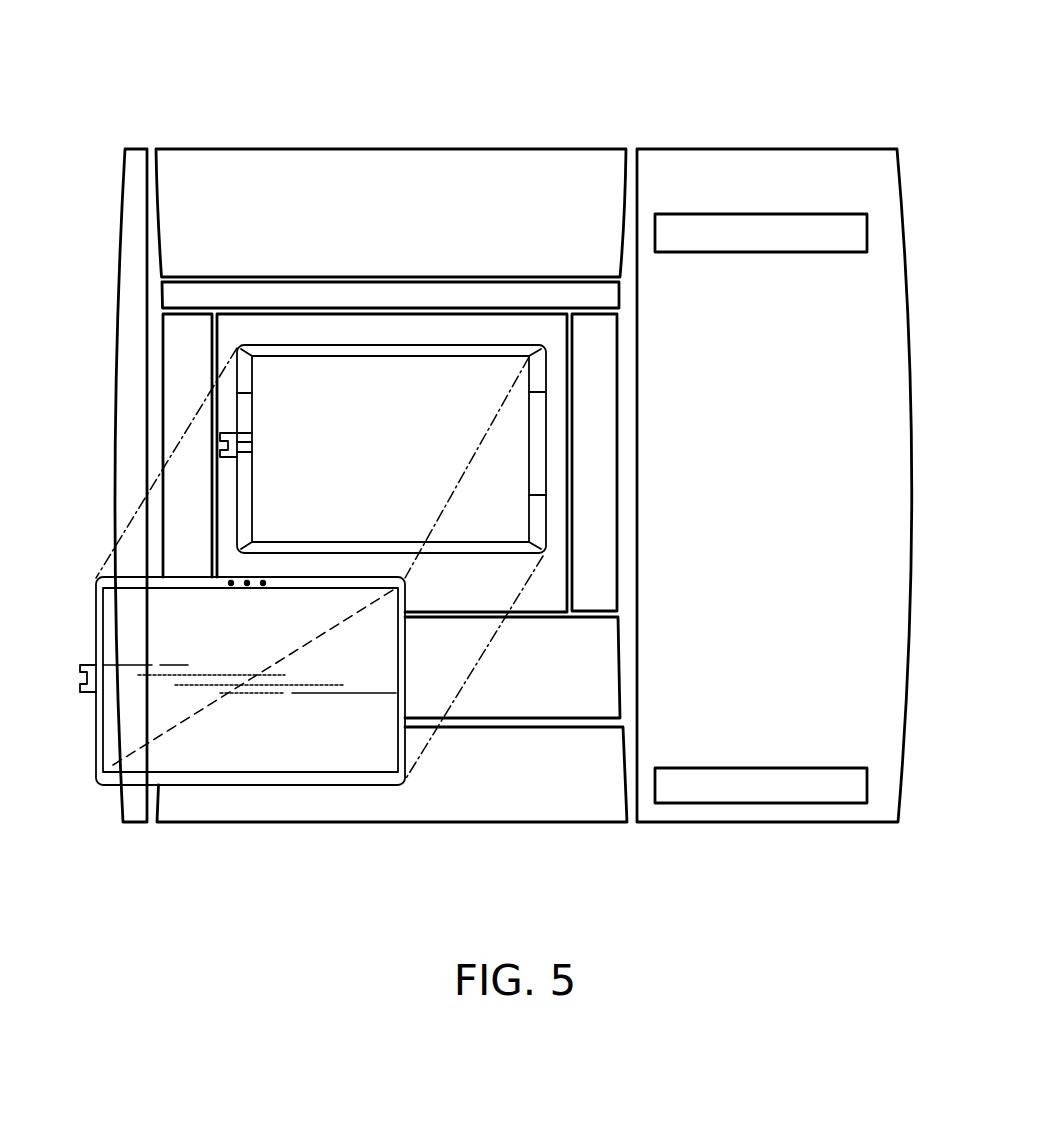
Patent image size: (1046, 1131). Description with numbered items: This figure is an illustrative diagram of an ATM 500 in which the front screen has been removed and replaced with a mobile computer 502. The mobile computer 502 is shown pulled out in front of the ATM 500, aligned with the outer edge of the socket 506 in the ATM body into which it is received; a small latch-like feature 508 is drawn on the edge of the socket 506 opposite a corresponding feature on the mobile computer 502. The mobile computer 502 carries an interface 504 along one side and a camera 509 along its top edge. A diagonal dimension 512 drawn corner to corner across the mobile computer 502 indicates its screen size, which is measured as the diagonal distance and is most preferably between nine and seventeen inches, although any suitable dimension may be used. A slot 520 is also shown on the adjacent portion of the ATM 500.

The ATM 500 is at (146, 56).
The mobile computer 502 is at (183, 786).
The interface 504 is at (80, 688).
The socket 506 is at (237, 537).
The latch receiver 508 is at (218, 452).
The camera 509 is at (215, 583).
The diagonal dimension 512 is at (278, 663).
The slot 520 is at (867, 787).